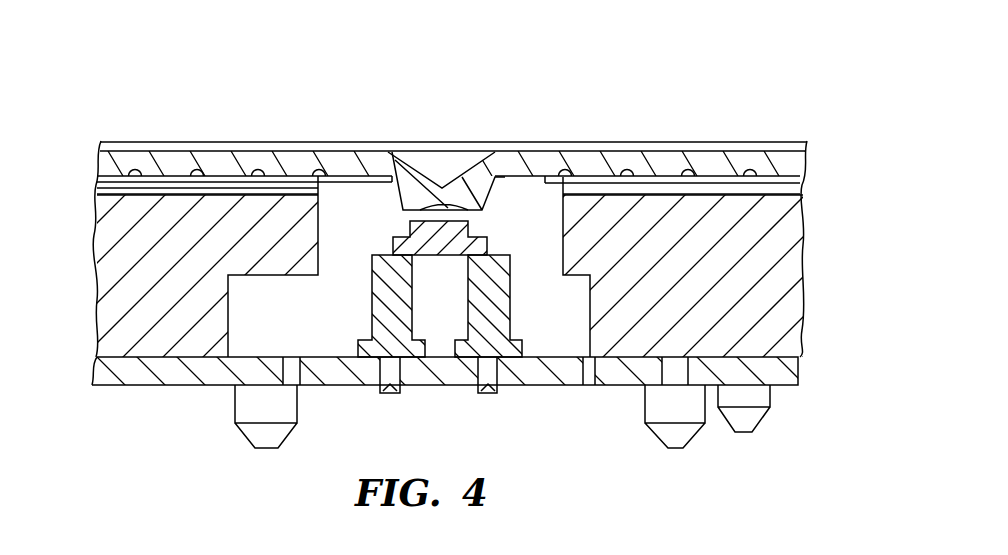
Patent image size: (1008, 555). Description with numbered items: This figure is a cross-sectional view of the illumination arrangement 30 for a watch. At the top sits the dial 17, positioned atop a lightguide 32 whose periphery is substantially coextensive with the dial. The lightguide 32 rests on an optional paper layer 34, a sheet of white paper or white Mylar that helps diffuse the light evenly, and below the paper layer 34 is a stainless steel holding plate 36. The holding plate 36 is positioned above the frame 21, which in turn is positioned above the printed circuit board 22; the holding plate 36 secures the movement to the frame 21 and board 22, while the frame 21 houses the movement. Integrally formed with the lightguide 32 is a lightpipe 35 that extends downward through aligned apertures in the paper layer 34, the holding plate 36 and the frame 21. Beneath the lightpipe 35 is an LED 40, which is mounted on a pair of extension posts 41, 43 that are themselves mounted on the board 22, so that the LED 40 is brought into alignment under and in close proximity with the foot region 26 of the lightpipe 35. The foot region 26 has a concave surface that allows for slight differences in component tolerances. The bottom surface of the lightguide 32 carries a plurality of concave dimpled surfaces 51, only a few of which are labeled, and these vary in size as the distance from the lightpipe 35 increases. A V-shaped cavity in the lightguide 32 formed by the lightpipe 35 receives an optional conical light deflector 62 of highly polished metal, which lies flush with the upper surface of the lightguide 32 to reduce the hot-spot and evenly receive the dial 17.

The dial 17 is at (107, 148).
The frame 21 is at (108, 272).
The printed circuit board 22 is at (760, 375).
The foot region 26 is at (455, 208).
The illumination arrangement 30 is at (632, 64).
The lightguide 32 is at (737, 157).
The paper layer 34 is at (105, 182).
The lightpipe 35 is at (488, 198).
The holding plate 36 is at (102, 197).
The LED 40 is at (420, 232).
The extension post 41 is at (370, 320).
The extension post 43 is at (507, 318).
The concave dimpled surfaces 51 is at (197, 170).
The conical light deflector 62 is at (418, 165).